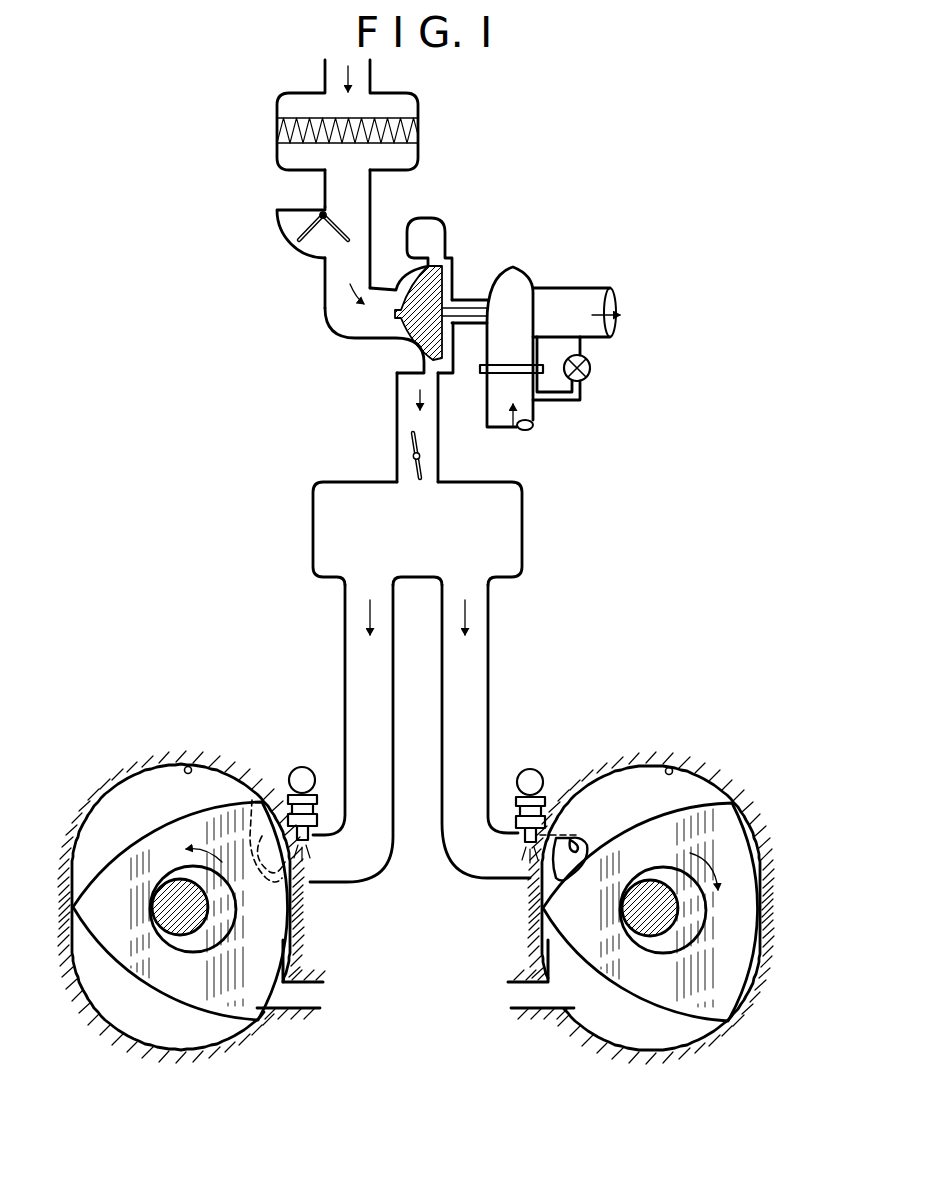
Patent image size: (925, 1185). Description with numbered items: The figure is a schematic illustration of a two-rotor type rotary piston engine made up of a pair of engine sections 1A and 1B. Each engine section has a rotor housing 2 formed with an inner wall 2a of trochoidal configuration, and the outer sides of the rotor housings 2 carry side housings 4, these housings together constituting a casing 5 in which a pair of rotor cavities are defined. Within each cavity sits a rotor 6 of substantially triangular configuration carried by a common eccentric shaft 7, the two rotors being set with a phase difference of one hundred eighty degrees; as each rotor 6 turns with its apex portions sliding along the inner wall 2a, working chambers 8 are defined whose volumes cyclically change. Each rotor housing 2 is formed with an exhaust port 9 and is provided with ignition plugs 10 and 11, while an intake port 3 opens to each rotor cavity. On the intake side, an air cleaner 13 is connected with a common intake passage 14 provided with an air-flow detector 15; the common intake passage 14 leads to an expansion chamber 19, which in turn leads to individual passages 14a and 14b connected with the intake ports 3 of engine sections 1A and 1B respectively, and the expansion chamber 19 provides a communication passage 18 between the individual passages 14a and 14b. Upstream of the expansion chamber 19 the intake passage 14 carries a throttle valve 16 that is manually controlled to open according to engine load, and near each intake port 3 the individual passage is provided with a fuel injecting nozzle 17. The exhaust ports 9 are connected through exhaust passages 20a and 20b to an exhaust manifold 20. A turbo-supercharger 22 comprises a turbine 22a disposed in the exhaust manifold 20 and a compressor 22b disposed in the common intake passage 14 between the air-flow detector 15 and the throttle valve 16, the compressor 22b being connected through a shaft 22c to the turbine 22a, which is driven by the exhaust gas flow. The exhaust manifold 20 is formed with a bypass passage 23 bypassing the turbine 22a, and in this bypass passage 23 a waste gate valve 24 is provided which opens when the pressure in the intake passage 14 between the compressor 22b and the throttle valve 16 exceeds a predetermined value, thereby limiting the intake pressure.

The engine section 1A is at (133, 731).
The engine section 1B is at (713, 730).
The rotor housing 2 is at (169, 752).
The inner wall 2a is at (191, 765).
The intake port 3 is at (264, 783).
The side housing 4 is at (115, 807).
The casing 5 is at (125, 771).
The rotor 6 is at (110, 862).
The eccentric shaft 7 is at (195, 928).
The working chamber 8 is at (158, 808).
The exhaust port 9 is at (287, 994).
The ignition plug 10 is at (33, 913).
The ignition plug 11 is at (72, 898).
The air cleaner 13 is at (421, 127).
The common intake passage 14 is at (360, 191).
The individual passage 14a is at (363, 658).
The individual passage 14b is at (470, 666).
The air-flow detector 15 is at (280, 244).
The throttle valve 16 is at (412, 439).
The fuel injecting nozzle 17 is at (303, 767).
The communication passage 18 is at (423, 557).
The expansion chamber 19 is at (522, 534).
The exhaust manifold 20 is at (587, 300).
The exhaust passage 20a is at (318, 1000).
The exhaust passage 20b is at (517, 1000).
The turbo-supercharger 22 is at (470, 281).
The turbine 22a is at (508, 288).
The compressor 22b is at (408, 347).
The shaft 22c is at (457, 328).
The bypass passage 23 is at (581, 400).
The waste gate valve 24 is at (591, 368).